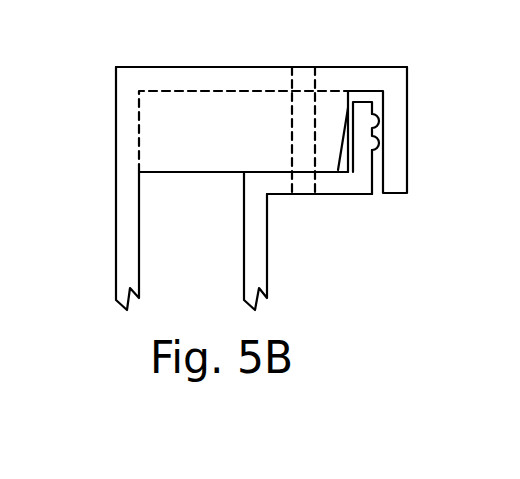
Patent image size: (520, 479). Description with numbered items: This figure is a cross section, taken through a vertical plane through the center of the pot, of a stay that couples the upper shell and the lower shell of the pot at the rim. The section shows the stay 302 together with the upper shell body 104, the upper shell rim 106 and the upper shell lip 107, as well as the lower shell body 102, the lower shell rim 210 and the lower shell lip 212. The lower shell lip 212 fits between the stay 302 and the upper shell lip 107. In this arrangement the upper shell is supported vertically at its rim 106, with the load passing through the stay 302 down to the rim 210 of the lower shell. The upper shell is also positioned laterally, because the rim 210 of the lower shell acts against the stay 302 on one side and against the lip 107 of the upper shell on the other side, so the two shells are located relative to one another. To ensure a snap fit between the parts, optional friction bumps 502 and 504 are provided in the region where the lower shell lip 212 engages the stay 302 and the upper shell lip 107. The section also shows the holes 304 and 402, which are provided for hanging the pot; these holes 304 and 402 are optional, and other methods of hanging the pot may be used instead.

The lower shell body 102 is at (267, 242).
The upper shell body 104 is at (115, 185).
The upper shell rim 106 is at (270, 67).
The upper shell lip 107 is at (407, 158).
The lower shell rim 210 is at (350, 194).
The lower shell lip 212 is at (372, 173).
The stay 302 is at (208, 125).
The hole 304 is at (303, 67).
The hole 402 is at (305, 195).
The friction bump 502 is at (378, 115).
The friction bump 504 is at (378, 150).